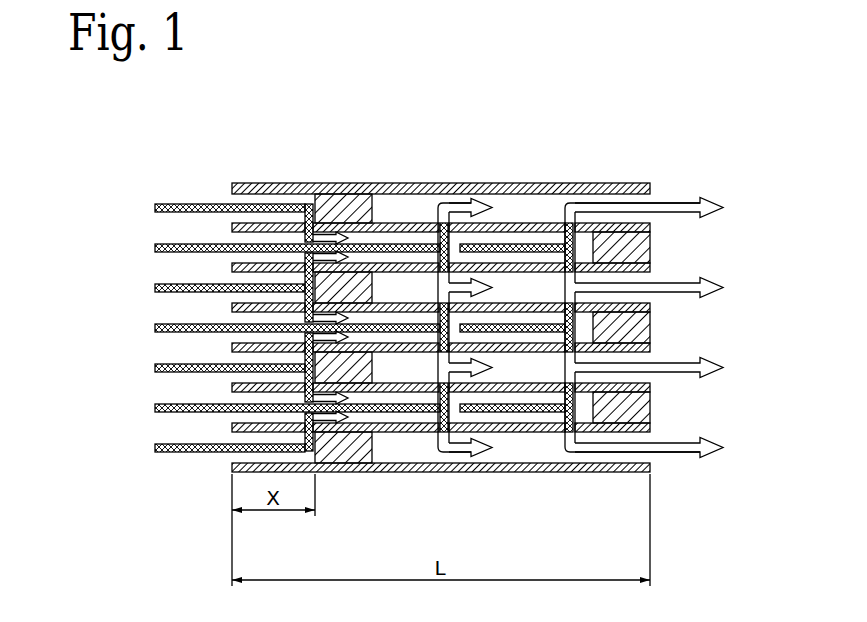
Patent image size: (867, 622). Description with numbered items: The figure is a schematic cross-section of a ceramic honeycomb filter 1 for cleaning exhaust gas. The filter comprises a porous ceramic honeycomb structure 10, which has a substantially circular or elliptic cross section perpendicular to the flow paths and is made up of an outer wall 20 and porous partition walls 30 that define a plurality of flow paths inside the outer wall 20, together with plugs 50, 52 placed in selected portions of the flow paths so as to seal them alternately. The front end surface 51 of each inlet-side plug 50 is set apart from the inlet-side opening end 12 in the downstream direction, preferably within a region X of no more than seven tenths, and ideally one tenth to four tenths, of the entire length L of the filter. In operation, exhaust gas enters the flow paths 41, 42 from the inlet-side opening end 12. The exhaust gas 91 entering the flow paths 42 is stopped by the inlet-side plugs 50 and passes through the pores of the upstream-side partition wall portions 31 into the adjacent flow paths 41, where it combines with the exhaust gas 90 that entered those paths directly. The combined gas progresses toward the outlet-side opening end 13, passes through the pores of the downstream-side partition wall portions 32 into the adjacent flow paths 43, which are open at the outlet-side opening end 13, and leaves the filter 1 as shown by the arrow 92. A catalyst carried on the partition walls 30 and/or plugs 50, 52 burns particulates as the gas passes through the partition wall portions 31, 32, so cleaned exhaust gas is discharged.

The honeycomb filter 1 is at (225, 106).
The porous ceramic honeycomb structure 10 is at (373, 179).
The inlet-side opening end 12 is at (232, 228).
The outlet-side opening end 13 is at (655, 228).
The outer wall 20 is at (444, 182).
The porous partition walls 30 is at (507, 224).
The upstream-side partition wall portions 31 is at (247, 444).
The downstream-side partition wall portions 32 is at (518, 433).
The flow paths 41 is at (270, 238).
The flow paths 42 is at (288, 200).
The flow paths 43 is at (637, 377).
The plugs 50 is at (357, 448).
The front end surface 51 is at (310, 455).
The plugs 52 is at (627, 410).
The exhaust gas 90 is at (155, 248).
The exhaust gas 91 is at (155, 207).
The arrow 92 is at (713, 207).